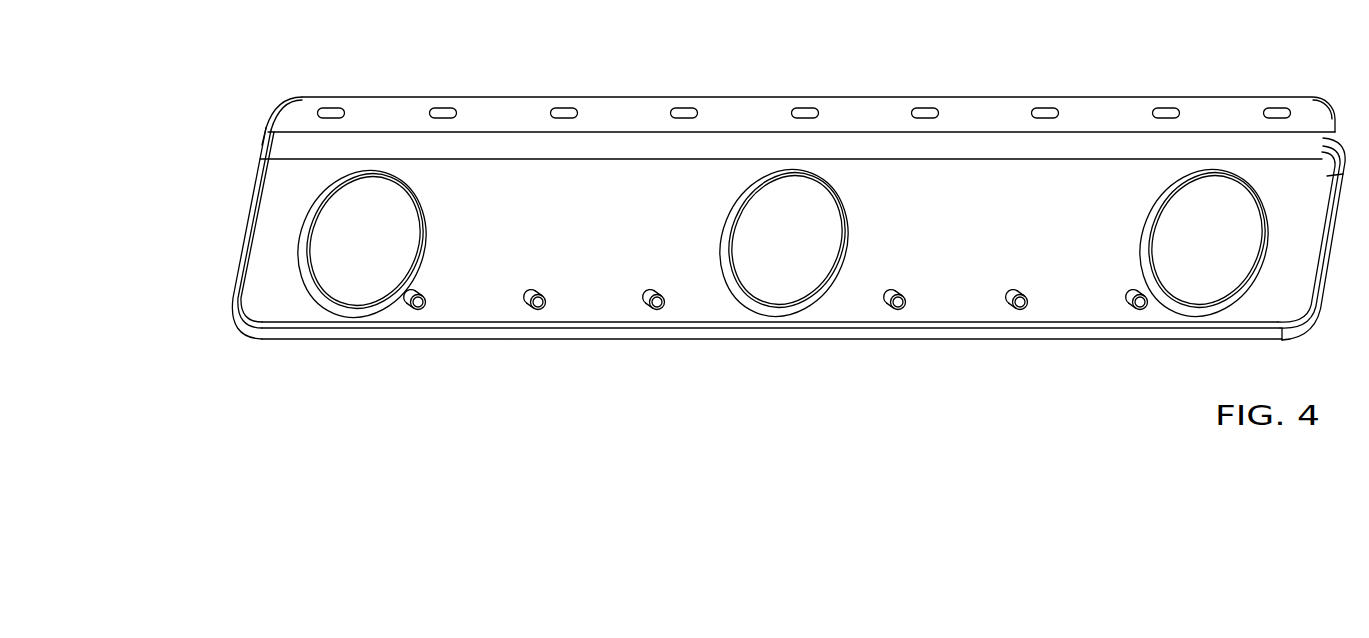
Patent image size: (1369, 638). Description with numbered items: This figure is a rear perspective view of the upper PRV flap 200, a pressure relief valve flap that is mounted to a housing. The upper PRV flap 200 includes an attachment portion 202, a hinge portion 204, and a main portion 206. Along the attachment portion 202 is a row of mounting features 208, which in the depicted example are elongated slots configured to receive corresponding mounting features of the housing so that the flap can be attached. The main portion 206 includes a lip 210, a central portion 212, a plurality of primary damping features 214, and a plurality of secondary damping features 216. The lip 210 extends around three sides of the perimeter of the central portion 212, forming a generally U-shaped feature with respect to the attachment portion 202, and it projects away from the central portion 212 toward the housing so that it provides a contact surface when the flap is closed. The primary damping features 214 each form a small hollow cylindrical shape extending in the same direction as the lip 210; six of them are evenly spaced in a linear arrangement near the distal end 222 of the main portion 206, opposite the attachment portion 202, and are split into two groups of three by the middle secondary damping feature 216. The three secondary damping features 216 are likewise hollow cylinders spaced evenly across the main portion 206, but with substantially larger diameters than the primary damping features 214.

The upper PRV flap 200 is at (703, 46).
The attachment portion 202 is at (363, 108).
The hinge portion 204 is at (310, 148).
The main portion 206 is at (490, 195).
The mounting features 208 is at (1025, 112).
The lip 210 is at (247, 237).
The central portion 212 is at (613, 237).
The primary damping features 214 is at (548, 303).
The secondary damping features 216 is at (420, 265).
The distal end 222 is at (775, 343).